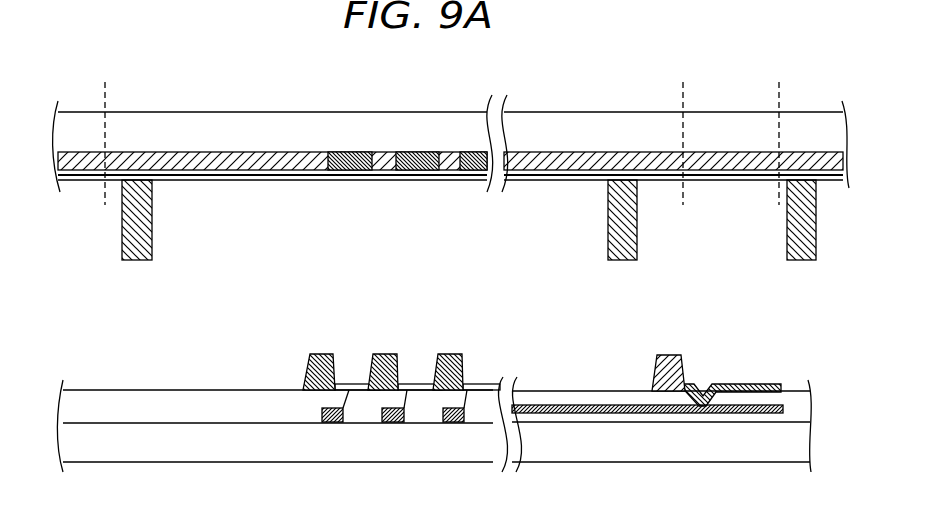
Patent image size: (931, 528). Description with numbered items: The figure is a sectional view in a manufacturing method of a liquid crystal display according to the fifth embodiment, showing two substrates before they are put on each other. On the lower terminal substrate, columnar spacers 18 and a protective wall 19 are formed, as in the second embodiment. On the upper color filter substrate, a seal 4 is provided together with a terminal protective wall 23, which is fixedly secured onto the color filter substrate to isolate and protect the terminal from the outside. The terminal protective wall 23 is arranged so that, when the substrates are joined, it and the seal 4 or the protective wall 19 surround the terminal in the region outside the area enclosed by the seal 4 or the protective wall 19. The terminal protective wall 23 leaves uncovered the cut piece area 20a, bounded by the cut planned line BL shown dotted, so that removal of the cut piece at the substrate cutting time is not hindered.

The cut piece area 20a is at (602, 125).
The seal 4 is at (139, 246).
The terminal protective wall 23 is at (805, 248).
The columnar spacers 18 is at (328, 352).
The protective wall 19 is at (672, 355).